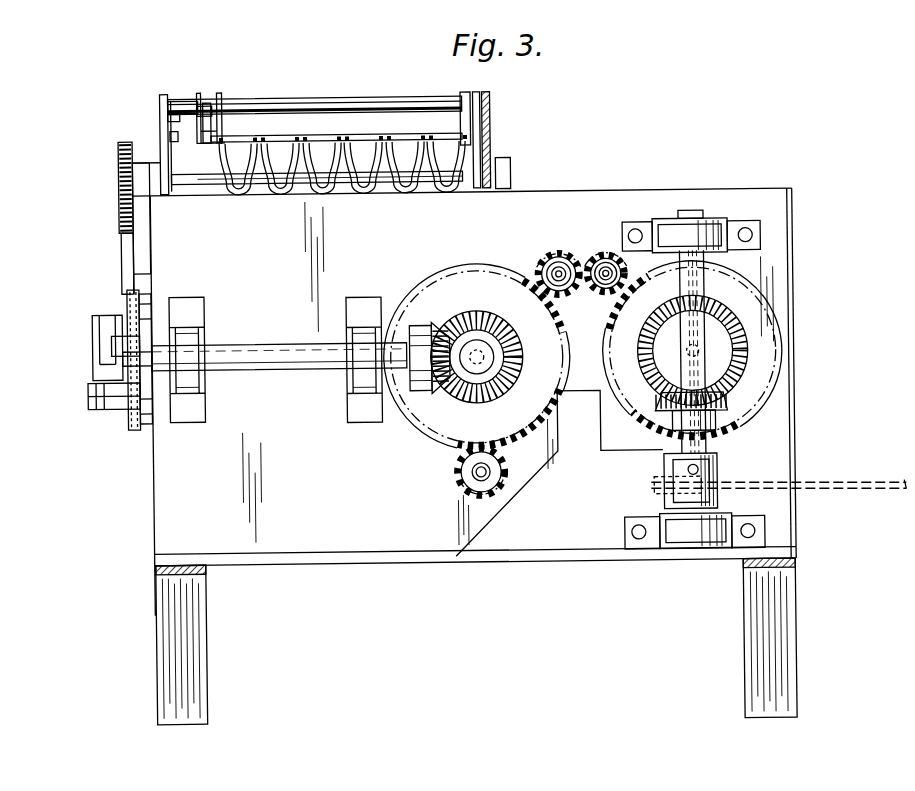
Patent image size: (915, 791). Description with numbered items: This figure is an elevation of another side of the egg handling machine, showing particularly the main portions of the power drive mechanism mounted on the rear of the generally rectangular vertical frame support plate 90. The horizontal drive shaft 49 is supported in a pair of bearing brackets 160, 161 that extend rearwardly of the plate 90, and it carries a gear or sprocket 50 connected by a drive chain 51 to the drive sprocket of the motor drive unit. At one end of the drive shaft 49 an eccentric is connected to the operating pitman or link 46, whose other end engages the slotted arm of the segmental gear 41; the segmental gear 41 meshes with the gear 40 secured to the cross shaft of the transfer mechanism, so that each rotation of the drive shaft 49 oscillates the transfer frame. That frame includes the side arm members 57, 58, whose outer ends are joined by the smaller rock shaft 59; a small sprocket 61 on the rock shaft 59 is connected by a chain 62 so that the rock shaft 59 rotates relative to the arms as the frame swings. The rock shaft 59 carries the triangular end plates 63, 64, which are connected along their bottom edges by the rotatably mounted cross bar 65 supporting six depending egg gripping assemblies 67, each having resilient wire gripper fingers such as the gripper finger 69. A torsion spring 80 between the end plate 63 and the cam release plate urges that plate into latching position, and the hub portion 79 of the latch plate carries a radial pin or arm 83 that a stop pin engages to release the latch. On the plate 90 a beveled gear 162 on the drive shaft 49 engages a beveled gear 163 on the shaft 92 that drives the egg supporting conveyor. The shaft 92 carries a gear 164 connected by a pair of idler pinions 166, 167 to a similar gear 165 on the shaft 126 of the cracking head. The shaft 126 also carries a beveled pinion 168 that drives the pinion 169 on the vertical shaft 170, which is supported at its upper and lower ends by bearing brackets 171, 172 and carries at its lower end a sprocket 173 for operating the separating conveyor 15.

The endless conveyor 15 is at (837, 484).
The gear 40 is at (120, 168).
The segmental gear 41 is at (122, 226).
The operating pitman or link 46 is at (103, 350).
The drive shaft 49 is at (249, 350).
The gear or sprocket 50 is at (140, 384).
The drive chain 51 is at (126, 413).
The side arm member 57 is at (166, 129).
The side arm 58 is at (483, 124).
The rock shaft 59 is at (302, 102).
The sprocket 61 is at (495, 100).
The chain 62 is at (496, 173).
The triangular end plate 63 is at (225, 115).
The triangular end plate 64 is at (473, 134).
The cross bar 65 is at (407, 135).
The egg gripping assembly 67 is at (308, 193).
The gripper finger 69 is at (316, 177).
The hub portion 79 is at (196, 95).
The torsion spring 80 is at (213, 92).
The pin or arm 83 is at (179, 131).
The vertical frame support plate 90 is at (588, 193).
The shaft 92 is at (484, 343).
The shaft 126 is at (705, 358).
The bearing bracket 160 is at (198, 307).
The bearing bracket 161 is at (356, 300).
The beveled gear 162 is at (429, 343).
The beveled gear 163 is at (473, 312).
The gear 164 is at (448, 277).
The gear 165 is at (746, 298).
The idler pinion 166 is at (564, 254).
The idler pinion 167 is at (602, 252).
The beveled pinion 168 is at (638, 352).
The pinion 169 is at (728, 403).
The vertical shaft 170 is at (684, 292).
The bearing bracket 171 is at (719, 228).
The bearing bracket 172 is at (717, 476).
The sprocket 173 is at (651, 485).